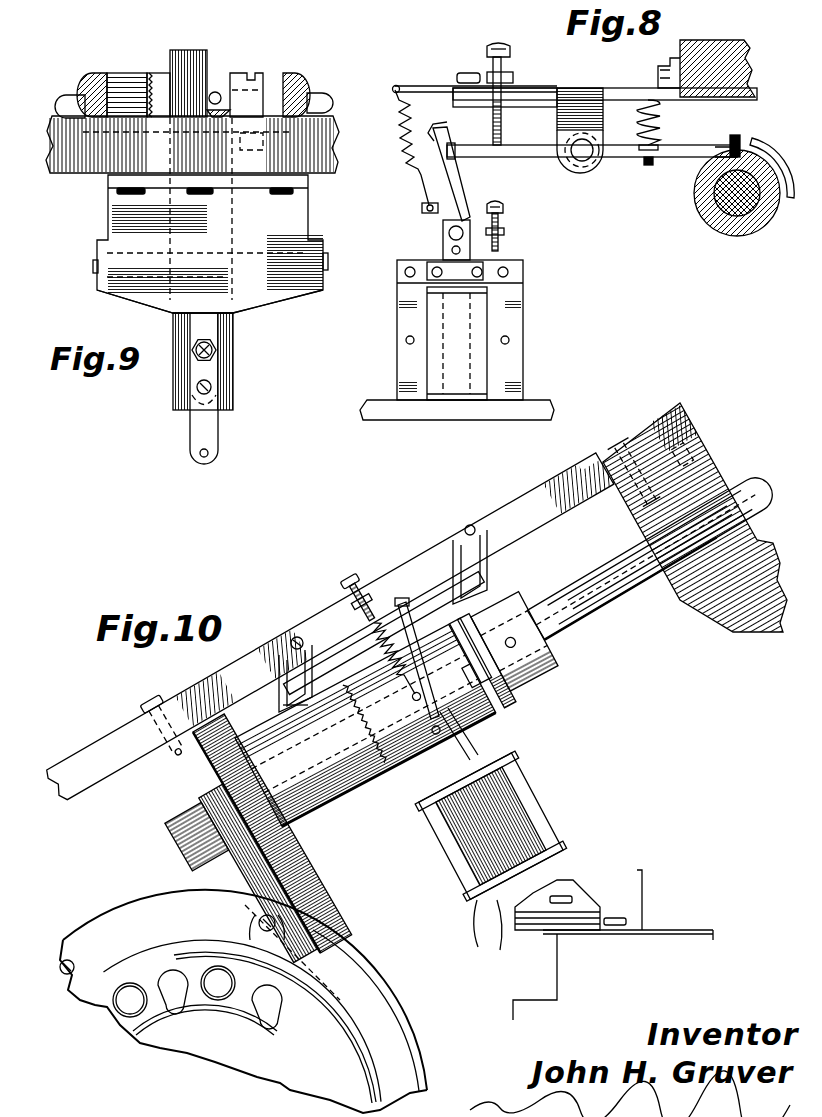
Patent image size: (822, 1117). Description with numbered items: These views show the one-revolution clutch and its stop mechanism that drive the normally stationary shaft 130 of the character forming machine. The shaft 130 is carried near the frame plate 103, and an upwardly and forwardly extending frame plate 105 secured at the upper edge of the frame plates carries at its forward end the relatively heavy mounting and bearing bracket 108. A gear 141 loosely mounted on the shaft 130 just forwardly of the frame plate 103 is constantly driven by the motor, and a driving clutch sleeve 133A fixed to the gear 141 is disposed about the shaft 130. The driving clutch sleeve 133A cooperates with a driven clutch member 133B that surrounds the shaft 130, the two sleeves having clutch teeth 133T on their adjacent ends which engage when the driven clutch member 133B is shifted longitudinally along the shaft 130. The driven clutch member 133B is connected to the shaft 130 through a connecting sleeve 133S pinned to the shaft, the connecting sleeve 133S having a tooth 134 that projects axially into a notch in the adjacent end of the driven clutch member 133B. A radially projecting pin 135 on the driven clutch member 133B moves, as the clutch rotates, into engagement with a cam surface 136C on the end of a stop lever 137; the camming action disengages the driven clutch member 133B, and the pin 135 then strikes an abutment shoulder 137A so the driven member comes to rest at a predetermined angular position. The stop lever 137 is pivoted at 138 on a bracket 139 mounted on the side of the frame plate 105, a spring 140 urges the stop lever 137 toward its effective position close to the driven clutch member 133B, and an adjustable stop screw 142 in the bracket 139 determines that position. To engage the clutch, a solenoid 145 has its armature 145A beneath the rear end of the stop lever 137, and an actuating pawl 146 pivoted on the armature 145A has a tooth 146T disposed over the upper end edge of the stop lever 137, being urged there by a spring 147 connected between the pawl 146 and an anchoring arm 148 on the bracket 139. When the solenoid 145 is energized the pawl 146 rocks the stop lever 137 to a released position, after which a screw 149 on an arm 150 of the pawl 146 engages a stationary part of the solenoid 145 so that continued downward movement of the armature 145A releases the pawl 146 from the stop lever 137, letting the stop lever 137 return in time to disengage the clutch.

In FIG. 10, the frame plate 103 is at (240, 872).
In FIG. 8, the frame plate 105 is at (697, 55).
In FIG. 10, the frame plate 105 is at (503, 510).
In FIG. 10, the mounting and bearing bracket 108 is at (703, 477).
In FIG. 9, the shaft 130 is at (72, 96).
In FIG. 8, the shaft 130 is at (742, 236).
In FIG. 10, the shaft 130 is at (620, 599).
In FIG. 9, the driving clutch sleeve 133A is at (125, 72).
In FIG. 10, the driving clutch sleeve 133A is at (333, 800).
In FIG. 9, the driven clutch member 133B is at (158, 72).
In FIG. 8, the driven clutch member 133B is at (702, 220).
In FIG. 10, the driven clutch member 133B is at (487, 716).
In FIG. 10, the connecting sleeve 133S is at (553, 672).
In FIG. 10, the clutch teeth 133T is at (361, 780).
In FIG. 9, the tooth 134 is at (258, 72).
In FIG. 10, the tooth 134 is at (470, 672).
In FIG. 9, the pin 135 is at (218, 92).
In FIG. 8, the pin 135 is at (738, 134).
In FIG. 10, the pin 135 is at (110, 930).
In FIG. 8, the cam surface 136C is at (785, 166).
In FIG. 9, the stop lever 137 is at (189, 57).
In FIG. 8, the stop lever 137 is at (628, 158).
In FIG. 10, the stop lever 137 is at (455, 592).
In FIG. 9, the abutment shoulder 137A is at (212, 118).
In FIG. 8, the abutment shoulder 137A is at (722, 151).
In FIG. 9, the pivot 138 is at (252, 246).
In FIG. 8, the pivot 138 is at (586, 163).
In FIG. 8, the bracket 139 is at (617, 96).
In FIG. 10, the bracket 139 is at (413, 597).
In FIG. 8, the spring 140 is at (659, 138).
In FIG. 10, the gear 141 is at (186, 774).
In FIG. 9, the adjustable stop screw 142 is at (215, 350).
In FIG. 8, the adjustable stop screw 142 is at (502, 120).
In FIG. 8, the solenoid 145 is at (480, 364).
In FIG. 10, the solenoid 145 is at (537, 813).
In FIG. 8, the armature 145A is at (443, 240).
In FIG. 8, the actuating pawl 146 is at (450, 190).
In FIG. 10, the actuating pawl 146 is at (411, 654).
In FIG. 8, the tooth 146T is at (437, 133).
In FIG. 8, the spring 147 is at (410, 152).
In FIG. 10, the spring 147 is at (402, 686).
In FIG. 9, the anchoring arm 148 is at (212, 441).
In FIG. 8, the anchoring arm 148 is at (404, 86).
In FIG. 8, the screw 149 is at (503, 241).
In FIG. 8, the arm 150 is at (506, 228).